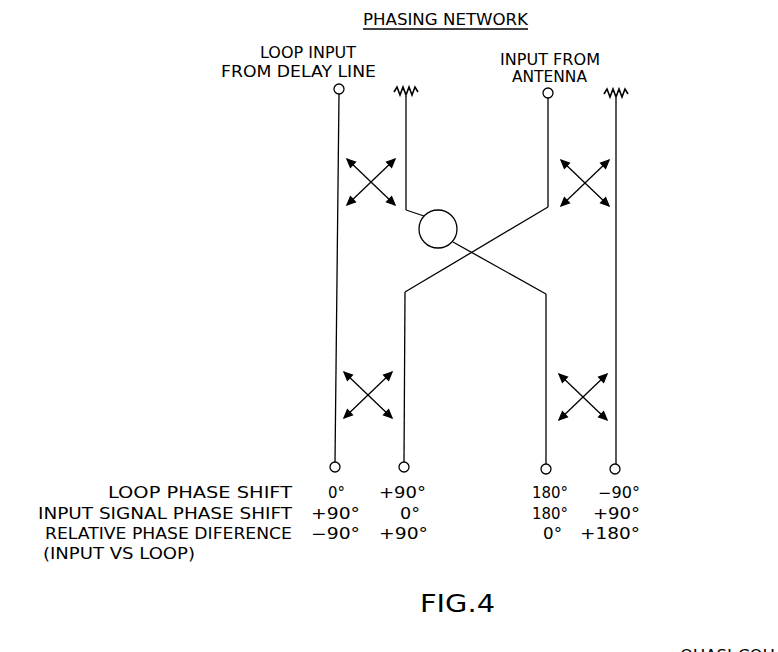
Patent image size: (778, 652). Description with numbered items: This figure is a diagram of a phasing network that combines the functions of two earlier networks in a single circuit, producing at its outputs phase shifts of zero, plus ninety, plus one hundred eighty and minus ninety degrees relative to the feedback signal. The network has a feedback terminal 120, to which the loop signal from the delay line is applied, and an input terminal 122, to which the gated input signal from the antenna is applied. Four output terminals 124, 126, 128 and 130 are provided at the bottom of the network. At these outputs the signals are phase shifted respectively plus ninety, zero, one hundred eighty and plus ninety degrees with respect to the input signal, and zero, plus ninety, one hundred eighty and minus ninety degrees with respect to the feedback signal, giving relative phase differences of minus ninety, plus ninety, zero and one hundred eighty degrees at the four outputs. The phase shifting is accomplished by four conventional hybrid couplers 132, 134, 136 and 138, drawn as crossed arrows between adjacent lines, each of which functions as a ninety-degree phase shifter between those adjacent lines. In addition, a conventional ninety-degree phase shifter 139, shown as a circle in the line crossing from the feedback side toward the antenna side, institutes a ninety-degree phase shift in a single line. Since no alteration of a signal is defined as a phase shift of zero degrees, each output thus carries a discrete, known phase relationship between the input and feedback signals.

The feedback terminal 120 is at (330, 96).
The input terminal 122 is at (539, 99).
The output terminal 124 is at (343, 460).
The output terminal 126 is at (413, 460).
The output terminal 128 is at (555, 462).
The output terminal 130 is at (624, 462).
The hybrid coupler 132 is at (392, 183).
The hybrid coupler 134 is at (388, 396).
The hybrid coupler 136 is at (603, 186).
The hybrid coupler 138 is at (597, 397).
The 90° phase shifter 139 is at (458, 213).